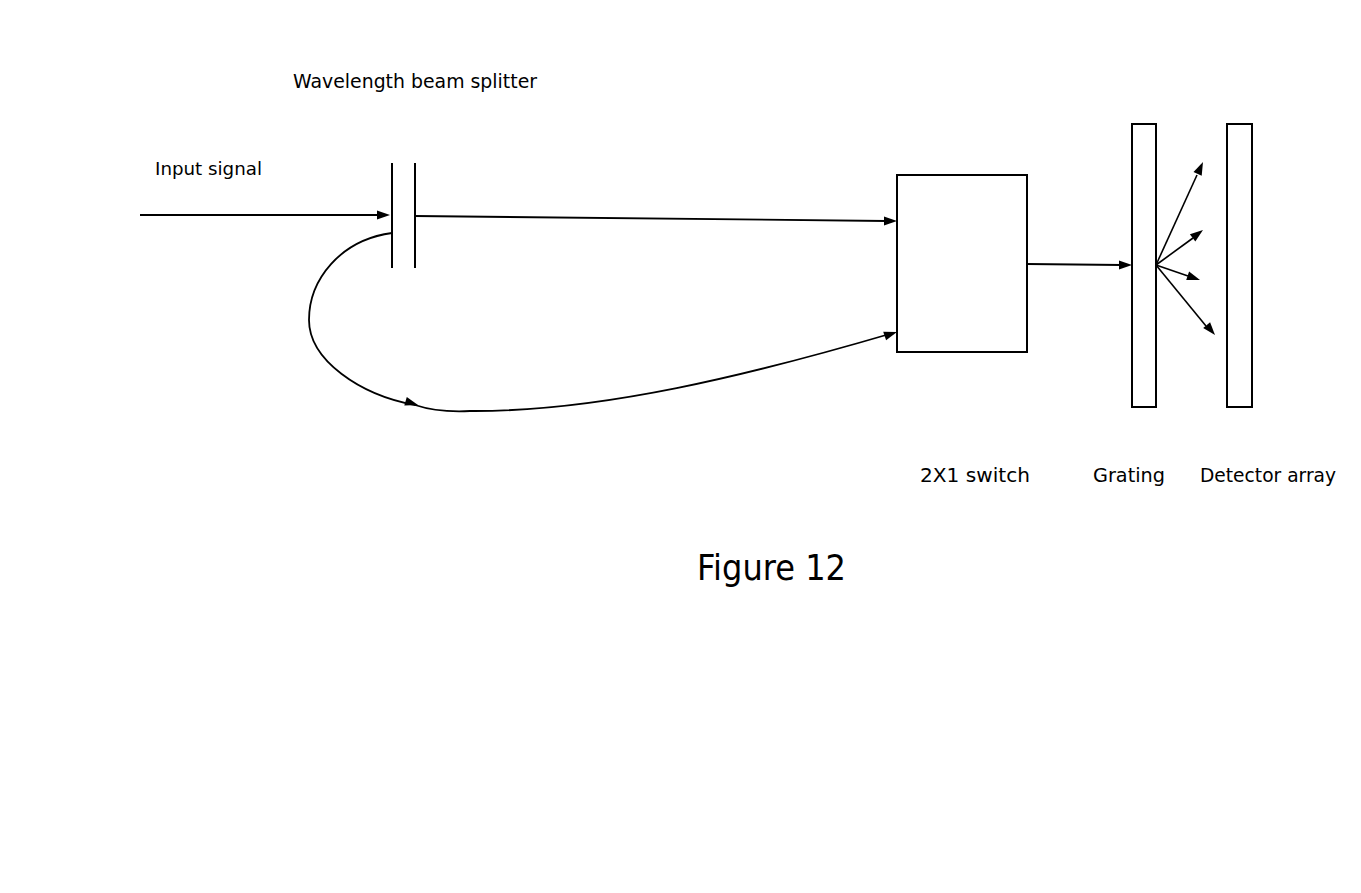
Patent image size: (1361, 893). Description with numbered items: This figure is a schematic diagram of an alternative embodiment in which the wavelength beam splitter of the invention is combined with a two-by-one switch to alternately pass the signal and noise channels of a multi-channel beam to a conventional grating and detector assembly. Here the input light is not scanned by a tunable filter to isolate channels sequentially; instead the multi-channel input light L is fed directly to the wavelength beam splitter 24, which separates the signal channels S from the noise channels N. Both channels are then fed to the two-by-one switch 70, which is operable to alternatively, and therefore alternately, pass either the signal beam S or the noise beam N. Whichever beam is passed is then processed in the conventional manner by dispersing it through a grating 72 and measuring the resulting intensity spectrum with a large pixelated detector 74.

The multi-channel input light L is at (282, 215).
The wavelength beam splitter 24 is at (415, 238).
The noise channels N is at (538, 218).
The signal channels S is at (345, 373).
The 2×1 switch 70 is at (973, 175).
The grating 72 is at (1158, 162).
The pixelated detector 74 is at (1252, 143).